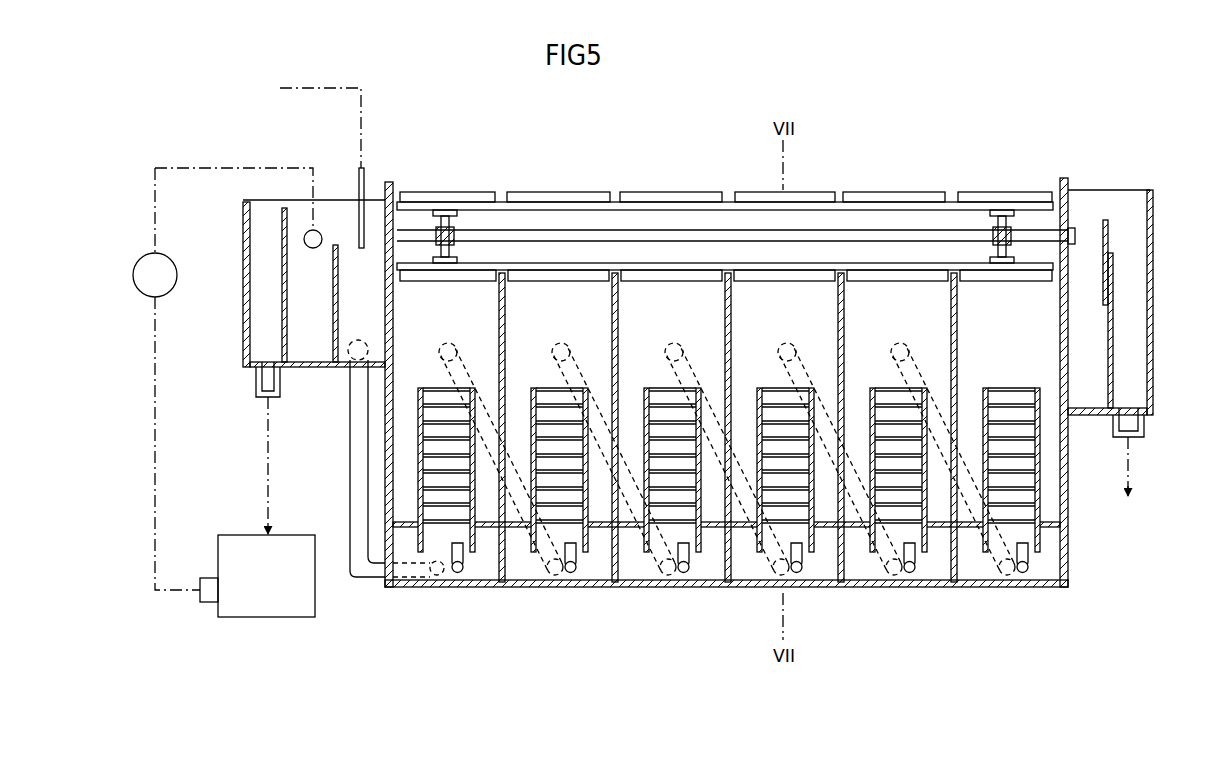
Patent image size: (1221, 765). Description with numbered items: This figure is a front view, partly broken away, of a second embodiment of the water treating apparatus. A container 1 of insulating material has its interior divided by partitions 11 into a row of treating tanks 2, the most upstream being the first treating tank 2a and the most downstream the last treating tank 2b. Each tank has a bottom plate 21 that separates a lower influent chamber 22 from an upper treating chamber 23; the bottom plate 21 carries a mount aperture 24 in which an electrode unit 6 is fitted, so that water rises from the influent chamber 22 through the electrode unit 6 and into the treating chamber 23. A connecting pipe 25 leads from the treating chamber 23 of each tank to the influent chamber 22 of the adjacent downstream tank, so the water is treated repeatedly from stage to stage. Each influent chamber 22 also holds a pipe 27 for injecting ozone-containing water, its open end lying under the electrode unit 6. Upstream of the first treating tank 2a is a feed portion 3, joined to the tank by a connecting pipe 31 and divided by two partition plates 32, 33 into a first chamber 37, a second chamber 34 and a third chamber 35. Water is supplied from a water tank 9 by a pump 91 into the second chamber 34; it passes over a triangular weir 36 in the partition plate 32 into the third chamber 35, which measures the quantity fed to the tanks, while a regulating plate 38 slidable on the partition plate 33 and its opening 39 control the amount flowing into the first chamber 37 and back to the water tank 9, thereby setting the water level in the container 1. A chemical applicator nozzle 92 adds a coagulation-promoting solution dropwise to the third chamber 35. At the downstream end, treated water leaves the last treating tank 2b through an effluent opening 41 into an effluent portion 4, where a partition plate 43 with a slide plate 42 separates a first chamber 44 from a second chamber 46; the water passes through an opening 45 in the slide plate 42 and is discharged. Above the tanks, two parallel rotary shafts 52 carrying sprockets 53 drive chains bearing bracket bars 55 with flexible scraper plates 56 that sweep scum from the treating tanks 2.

The container 1 is at (873, 595).
The treating tanks 2 is at (574, 295).
The first treating tank 2a is at (467, 300).
The last treating tank 2b is at (968, 300).
The feed portion 3 is at (292, 248).
The effluent portion 4 is at (1142, 315).
The electrode unit 6 is at (432, 387).
The water tank 9 is at (277, 602).
The partitions 11 is at (506, 322).
The bottom plate 21 is at (607, 522).
The influent chamber 22 is at (592, 560).
The treating chamber 23 is at (535, 290).
The mount aperture 24 is at (703, 533).
The connecting pipe 25 is at (543, 558).
The pipe 27 is at (473, 558).
The connecting pipe 31 is at (355, 437).
The partition plate 32 is at (337, 312).
The partition plate 33 is at (290, 328).
The second chamber 34 is at (305, 292).
The third chamber 35 is at (352, 253).
The triangular weir 36 is at (333, 272).
The first chamber 37 is at (265, 283).
The regulating plate 38 is at (280, 222).
The opening 39 is at (280, 265).
The effluent opening 41 is at (1066, 388).
The slide plate 42 is at (1105, 220).
The partition plate 43 is at (1113, 300).
The first chamber 44 is at (1130, 360).
The opening 45 is at (1104, 255).
The second chamber 46 is at (1137, 246).
The rotary shafts 52 is at (858, 237).
The sprockets 53 is at (1006, 222).
The bracket bars 55 is at (800, 207).
The scraper plates 56 is at (755, 191).
The pump 91 is at (135, 283).
The chemical applicator nozzle 92 is at (365, 185).